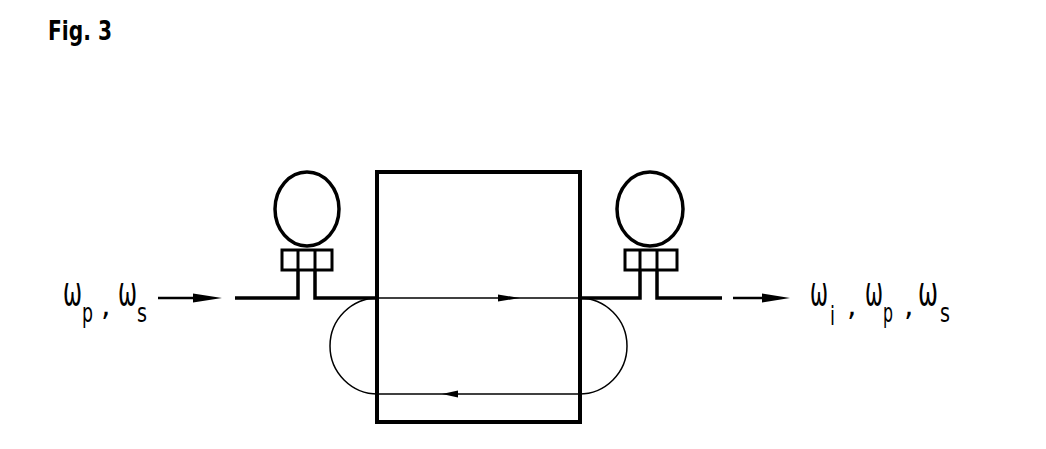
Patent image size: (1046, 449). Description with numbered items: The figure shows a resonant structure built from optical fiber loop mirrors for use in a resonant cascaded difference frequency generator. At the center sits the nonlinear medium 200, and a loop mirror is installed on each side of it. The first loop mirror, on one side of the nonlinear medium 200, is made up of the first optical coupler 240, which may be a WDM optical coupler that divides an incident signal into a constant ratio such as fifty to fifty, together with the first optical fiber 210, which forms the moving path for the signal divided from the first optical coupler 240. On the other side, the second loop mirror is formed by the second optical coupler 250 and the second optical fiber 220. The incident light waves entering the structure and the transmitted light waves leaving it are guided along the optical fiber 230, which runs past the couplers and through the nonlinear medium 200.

The nonlinear medium 200 is at (517, 170).
The first optical fiber 210 is at (307, 170).
The second optical fiber 220 is at (648, 170).
The optical fiber 230 is at (252, 300).
The first optical coupler 240 is at (280, 253).
The second optical coupler 250 is at (675, 257).